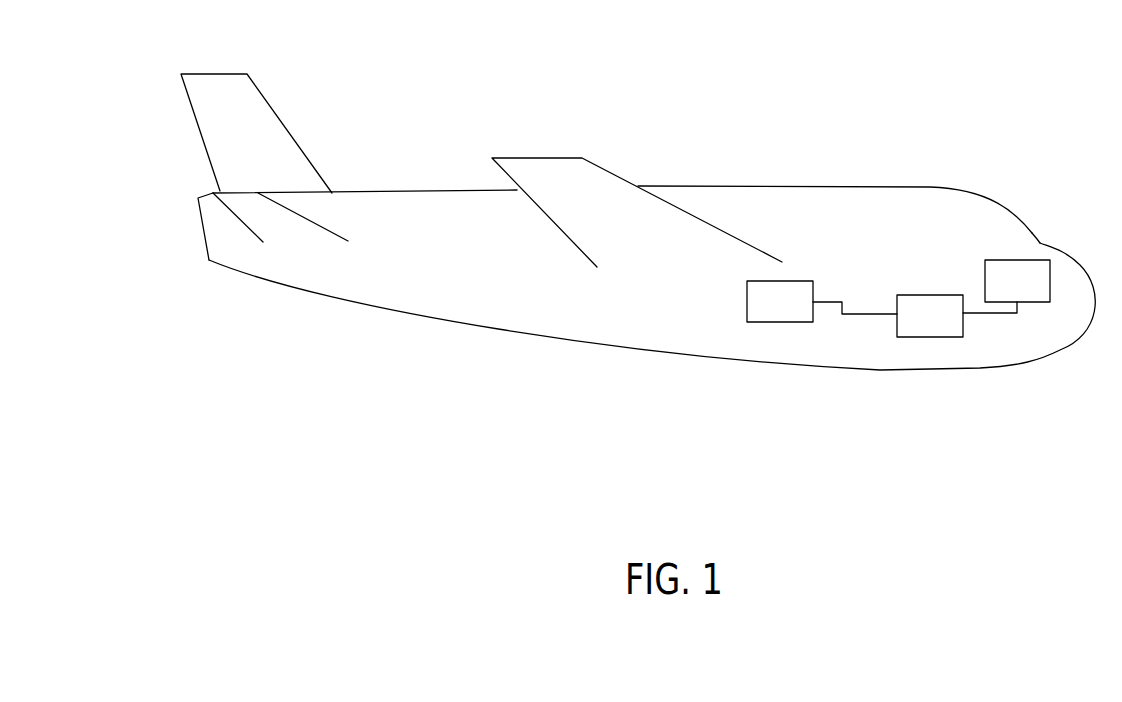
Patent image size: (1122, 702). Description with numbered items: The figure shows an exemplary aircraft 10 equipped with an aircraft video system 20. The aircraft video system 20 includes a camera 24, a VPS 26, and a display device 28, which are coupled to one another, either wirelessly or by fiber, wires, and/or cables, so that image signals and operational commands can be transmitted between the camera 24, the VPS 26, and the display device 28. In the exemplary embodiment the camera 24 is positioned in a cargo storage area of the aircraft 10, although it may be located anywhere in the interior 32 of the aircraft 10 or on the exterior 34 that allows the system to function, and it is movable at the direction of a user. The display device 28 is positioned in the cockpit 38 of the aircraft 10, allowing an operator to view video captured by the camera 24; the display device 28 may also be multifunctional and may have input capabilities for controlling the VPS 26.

The aircraft 10 is at (373, 312).
The aircraft video system 20 is at (970, 146).
The camera 24 is at (792, 322).
The VPS 26 is at (940, 337).
The display device 28 is at (1032, 302).
The interior 32 is at (613, 338).
The exterior 34 is at (710, 463).
The cockpit 38 is at (1012, 235).